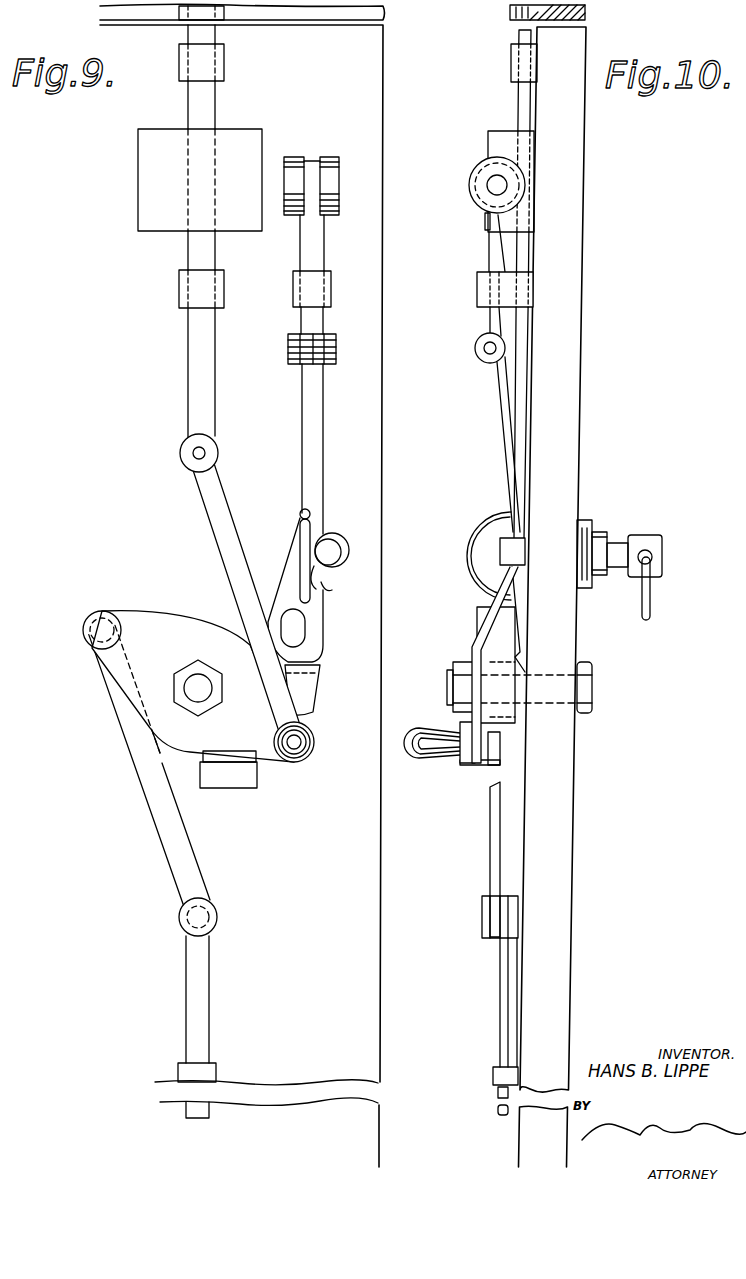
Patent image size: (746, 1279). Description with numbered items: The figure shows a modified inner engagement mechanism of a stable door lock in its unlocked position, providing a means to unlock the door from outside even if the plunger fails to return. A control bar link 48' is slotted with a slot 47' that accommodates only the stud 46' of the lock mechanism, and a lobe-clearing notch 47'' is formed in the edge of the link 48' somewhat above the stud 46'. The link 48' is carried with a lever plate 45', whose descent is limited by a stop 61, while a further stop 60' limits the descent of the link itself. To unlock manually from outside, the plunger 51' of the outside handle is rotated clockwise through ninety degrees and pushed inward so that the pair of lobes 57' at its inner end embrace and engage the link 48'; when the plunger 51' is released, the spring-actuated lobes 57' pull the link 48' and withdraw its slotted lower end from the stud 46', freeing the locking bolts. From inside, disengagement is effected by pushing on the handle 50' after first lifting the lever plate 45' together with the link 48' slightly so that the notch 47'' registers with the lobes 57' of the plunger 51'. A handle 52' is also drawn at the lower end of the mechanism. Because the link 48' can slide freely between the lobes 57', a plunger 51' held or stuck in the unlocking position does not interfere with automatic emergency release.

In FIG. 9, the lever plate 45' is at (188, 677).
In FIG. 10, the stud 46' is at (519, 686).
In FIG. 9, the slot 47' is at (316, 590).
In FIG. 10, the slot 47' is at (559, 514).
In FIG. 9, the lobe-clearing notch 47'' is at (340, 584).
In FIG. 9, the link 48' is at (322, 345).
In FIG. 10, the link 48' is at (500, 284).
In FIG. 9, the handle 50' is at (332, 550).
In FIG. 10, the handle 50' is at (481, 556).
In FIG. 10, the plunger 51' is at (619, 564).
In FIG. 10, the handle 52' is at (458, 683).
In FIG. 9, the lobes 57' is at (368, 547).
In FIG. 9, the block 60' is at (320, 690).
In FIG. 9, the stop 61 is at (233, 778).